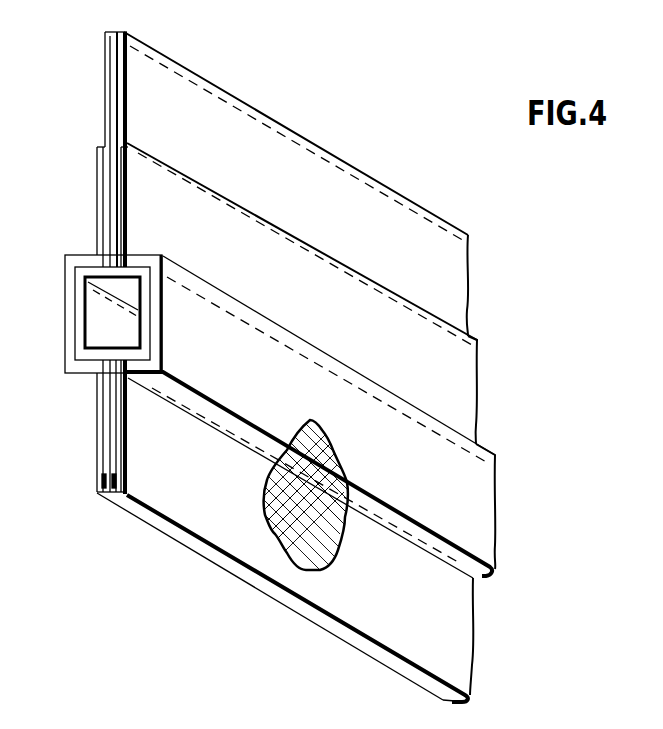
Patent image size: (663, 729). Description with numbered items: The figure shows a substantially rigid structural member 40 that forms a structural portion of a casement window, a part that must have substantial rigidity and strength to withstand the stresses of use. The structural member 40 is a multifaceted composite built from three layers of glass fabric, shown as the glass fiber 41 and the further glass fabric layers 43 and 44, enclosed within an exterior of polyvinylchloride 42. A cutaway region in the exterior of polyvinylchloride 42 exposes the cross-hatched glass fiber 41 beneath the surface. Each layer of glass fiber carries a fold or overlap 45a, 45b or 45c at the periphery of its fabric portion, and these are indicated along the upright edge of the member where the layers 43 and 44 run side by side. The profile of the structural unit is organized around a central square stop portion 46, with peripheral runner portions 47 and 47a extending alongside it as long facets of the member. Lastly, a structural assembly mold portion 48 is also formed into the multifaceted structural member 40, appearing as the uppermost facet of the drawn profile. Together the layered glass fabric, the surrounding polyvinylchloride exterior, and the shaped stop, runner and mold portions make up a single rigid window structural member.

The structural member 40 is at (331, 134).
The glass fiber 41 is at (322, 533).
The exterior of polyvinylchloride 42 is at (449, 240).
The glass fabric layer 43 is at (113, 405).
The glass fabric layer 44 is at (103, 453).
The fold or overlap 45a is at (110, 42).
The fold or overlap 45b is at (102, 147).
The fold or overlap 45c is at (128, 148).
The central square stop portion 46 is at (274, 400).
The peripheral runner portion 47 is at (268, 290).
The peripheral runner portion 47a is at (240, 500).
The structural assembly mold portion 48 is at (268, 187).